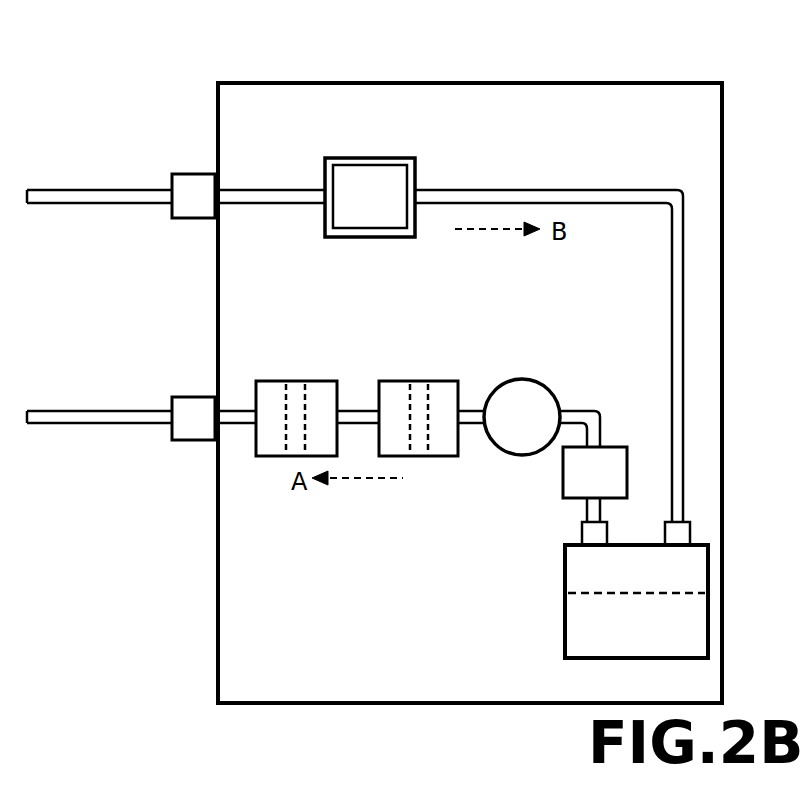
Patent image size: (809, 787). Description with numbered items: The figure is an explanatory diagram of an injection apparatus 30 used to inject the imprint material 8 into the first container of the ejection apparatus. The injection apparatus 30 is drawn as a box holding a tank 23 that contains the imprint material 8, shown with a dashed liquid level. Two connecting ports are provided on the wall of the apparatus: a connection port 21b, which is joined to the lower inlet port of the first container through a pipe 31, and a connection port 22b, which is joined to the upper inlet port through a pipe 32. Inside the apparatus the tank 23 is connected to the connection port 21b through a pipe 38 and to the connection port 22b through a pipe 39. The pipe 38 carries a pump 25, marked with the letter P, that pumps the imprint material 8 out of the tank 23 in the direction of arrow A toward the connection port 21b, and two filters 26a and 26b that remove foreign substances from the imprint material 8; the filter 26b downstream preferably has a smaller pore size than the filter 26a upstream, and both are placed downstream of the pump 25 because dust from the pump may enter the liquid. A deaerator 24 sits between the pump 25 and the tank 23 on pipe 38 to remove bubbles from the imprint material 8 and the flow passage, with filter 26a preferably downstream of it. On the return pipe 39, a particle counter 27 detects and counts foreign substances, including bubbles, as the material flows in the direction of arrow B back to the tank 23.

The injection apparatus 30 is at (358, 68).
The pipe 32 is at (88, 195).
The pipe 31 is at (90, 417).
The connection port 22b is at (195, 183).
The connection port 21b is at (193, 425).
The particle counter 27 is at (367, 213).
The pipe 39 is at (580, 197).
The filter 26b is at (298, 394).
The filter 26a is at (423, 394).
The pump 25 is at (518, 379).
The pipe 38 is at (583, 412).
The deaerator 24 is at (563, 478).
The tank 23 is at (565, 572).
The imprint material 8 is at (580, 632).